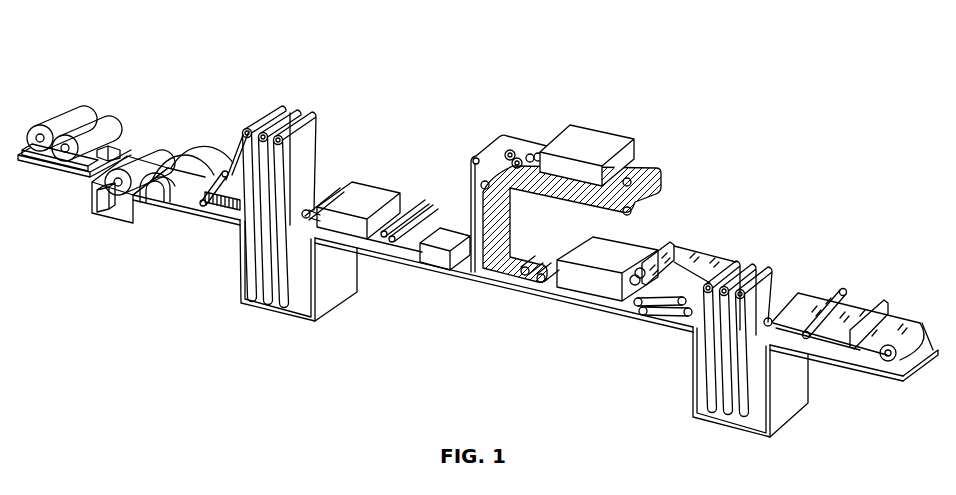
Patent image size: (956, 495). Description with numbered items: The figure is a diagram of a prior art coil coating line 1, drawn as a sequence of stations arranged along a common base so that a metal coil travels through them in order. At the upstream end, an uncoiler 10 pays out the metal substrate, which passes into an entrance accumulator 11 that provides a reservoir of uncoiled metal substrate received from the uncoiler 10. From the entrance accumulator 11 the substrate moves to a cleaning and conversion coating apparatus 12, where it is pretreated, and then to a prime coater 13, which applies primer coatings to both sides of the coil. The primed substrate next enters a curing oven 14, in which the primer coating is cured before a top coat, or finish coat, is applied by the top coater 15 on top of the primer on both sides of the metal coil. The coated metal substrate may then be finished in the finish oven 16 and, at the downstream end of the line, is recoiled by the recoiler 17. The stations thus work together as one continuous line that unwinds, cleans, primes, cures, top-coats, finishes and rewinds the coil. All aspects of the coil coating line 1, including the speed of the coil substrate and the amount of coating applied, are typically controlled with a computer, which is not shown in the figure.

The coil coating line 1 is at (256, 58).
The uncoiler 10 is at (157, 201).
The entrance accumulator 11 is at (318, 112).
The cleaning and conversion coating apparatus 12 is at (382, 182).
The prime coater 13 is at (495, 166).
The curing oven 14 is at (625, 133).
The top coater 15 is at (507, 270).
The finish oven 16 is at (644, 243).
The recoiler 17 is at (897, 362).